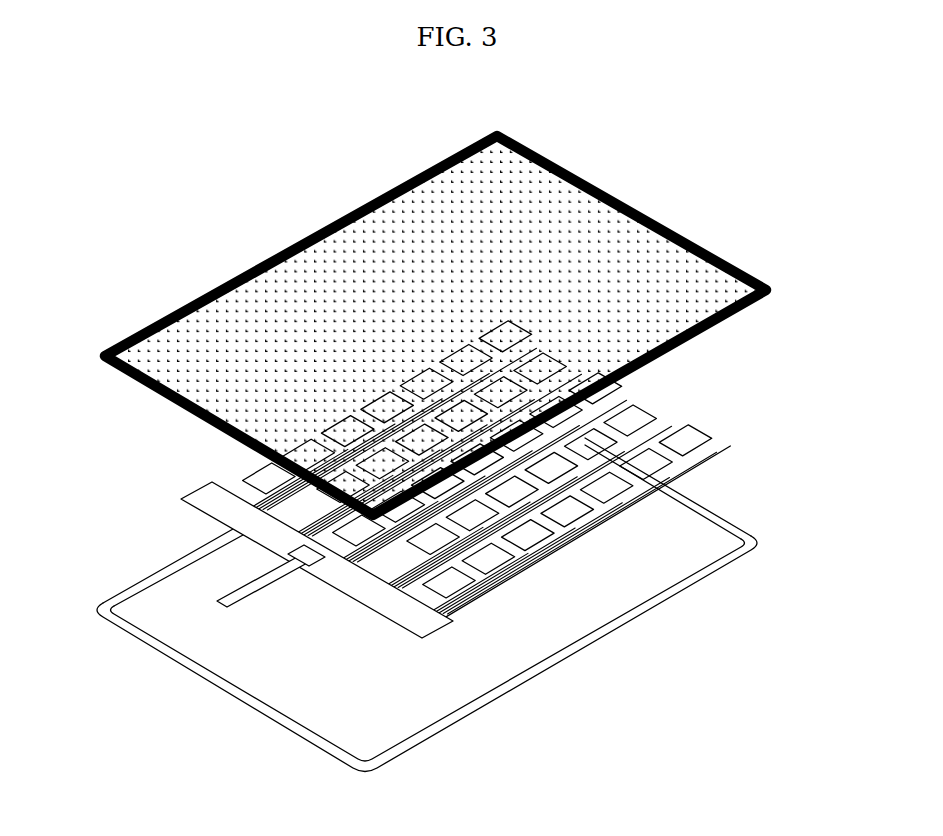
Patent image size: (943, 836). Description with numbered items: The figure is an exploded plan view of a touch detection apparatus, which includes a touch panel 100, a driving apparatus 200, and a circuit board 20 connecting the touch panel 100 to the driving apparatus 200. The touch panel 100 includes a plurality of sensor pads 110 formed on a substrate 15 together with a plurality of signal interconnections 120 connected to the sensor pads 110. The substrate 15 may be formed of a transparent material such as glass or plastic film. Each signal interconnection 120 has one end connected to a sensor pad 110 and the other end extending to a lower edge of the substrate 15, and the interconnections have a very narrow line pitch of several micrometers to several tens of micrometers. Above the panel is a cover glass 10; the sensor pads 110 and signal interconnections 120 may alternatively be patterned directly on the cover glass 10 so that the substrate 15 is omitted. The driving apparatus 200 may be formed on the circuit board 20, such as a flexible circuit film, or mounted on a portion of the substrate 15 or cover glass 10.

The cover glass 10 is at (668, 226).
The substrate 15 is at (673, 593).
The circuit board 20 is at (354, 590).
The touch panel 100 is at (778, 546).
The sensor pad 110 is at (237, 466).
The signal interconnection 120 is at (520, 578).
The driving apparatus 200 is at (300, 546).